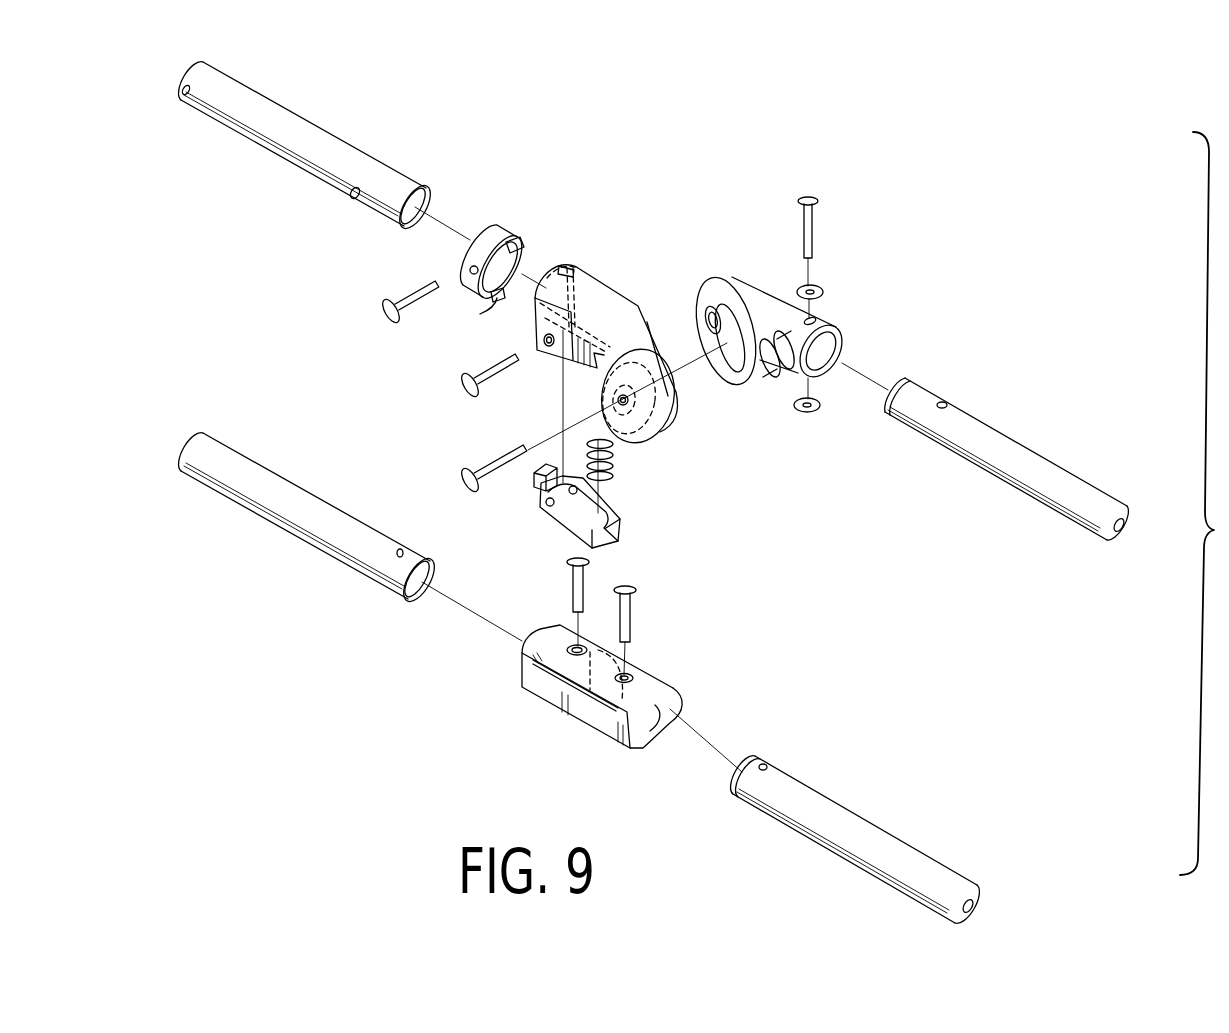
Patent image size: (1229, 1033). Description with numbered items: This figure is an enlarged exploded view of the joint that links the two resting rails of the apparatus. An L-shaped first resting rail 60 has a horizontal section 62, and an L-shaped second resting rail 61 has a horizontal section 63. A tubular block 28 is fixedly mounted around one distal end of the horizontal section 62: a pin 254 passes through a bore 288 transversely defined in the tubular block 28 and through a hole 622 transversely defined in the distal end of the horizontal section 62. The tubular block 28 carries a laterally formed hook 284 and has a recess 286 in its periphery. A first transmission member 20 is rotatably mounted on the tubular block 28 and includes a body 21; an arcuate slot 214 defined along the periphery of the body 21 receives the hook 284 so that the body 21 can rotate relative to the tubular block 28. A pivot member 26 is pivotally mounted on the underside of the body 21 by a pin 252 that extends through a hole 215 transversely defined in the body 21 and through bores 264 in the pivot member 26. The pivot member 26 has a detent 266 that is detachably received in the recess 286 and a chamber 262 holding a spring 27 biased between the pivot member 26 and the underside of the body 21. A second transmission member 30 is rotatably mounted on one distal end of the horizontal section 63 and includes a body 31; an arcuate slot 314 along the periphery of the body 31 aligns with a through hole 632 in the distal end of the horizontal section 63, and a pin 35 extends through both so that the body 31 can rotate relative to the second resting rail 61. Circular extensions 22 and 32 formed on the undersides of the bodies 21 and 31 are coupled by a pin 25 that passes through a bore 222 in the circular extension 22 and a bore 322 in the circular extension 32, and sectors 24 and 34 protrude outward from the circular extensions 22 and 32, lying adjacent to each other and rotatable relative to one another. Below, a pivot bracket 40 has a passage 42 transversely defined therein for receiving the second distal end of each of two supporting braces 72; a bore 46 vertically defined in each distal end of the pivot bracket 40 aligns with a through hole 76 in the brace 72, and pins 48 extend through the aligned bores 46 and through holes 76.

The first transmission member 20 is at (526, 352).
The body 21 is at (591, 326).
The arcuate slot 214 is at (566, 267).
The hole 215 is at (546, 339).
The circular extension 22 is at (615, 398).
The bore 222 is at (618, 401).
The sector 24 is at (634, 322).
The pin 25 is at (492, 470).
The pin 252 is at (470, 378).
The pin 254 is at (392, 303).
The pivot member 26 is at (573, 518).
The chamber 262 is at (608, 512).
The bores 264 is at (549, 507).
The detent 266 is at (540, 484).
The spring 27 is at (614, 458).
The tubular block 28 is at (452, 232).
The hook 284 is at (519, 242).
The recess 286 is at (470, 310).
The bore 288 is at (470, 268).
The second transmission member 30 is at (781, 313).
The body 31 is at (814, 305).
The arcuate slot 314 is at (814, 319).
The circular extension 32 is at (770, 378).
The bore 322 is at (716, 336).
The sector 34 is at (746, 352).
The pin 35 is at (813, 228).
The pivot bracket 40 is at (622, 682).
The passage 42 is at (662, 712).
The bore 46 is at (629, 675).
The pins 48 is at (632, 619).
The first resting rail 60 is at (308, 141).
The second resting rail 61 is at (1014, 445).
The horizontal section 62 is at (308, 148).
The hole 622 is at (355, 195).
The horizontal section 63 is at (1007, 445).
The through hole 632 is at (945, 402).
The supporting braces 72 is at (855, 816).
The through hole 76 is at (765, 765).